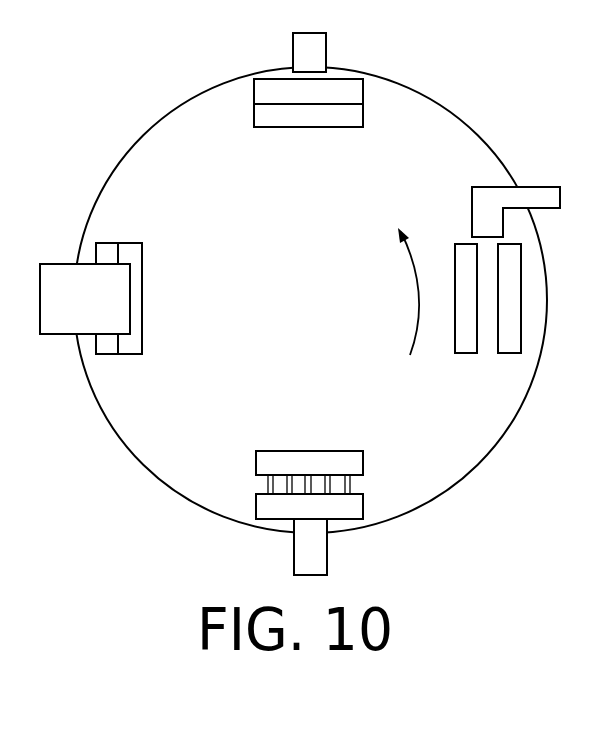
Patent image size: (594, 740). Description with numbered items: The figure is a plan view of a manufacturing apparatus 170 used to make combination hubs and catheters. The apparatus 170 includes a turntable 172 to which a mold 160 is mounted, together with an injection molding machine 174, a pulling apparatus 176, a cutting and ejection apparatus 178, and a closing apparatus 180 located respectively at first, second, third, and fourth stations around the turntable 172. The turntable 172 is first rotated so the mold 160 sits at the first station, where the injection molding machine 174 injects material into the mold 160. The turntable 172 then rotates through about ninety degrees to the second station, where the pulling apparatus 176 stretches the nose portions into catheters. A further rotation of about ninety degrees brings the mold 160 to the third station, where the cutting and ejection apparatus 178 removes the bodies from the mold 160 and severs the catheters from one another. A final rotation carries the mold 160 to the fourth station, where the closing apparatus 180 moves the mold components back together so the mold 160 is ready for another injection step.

The mold 160 is at (363, 115).
The manufacturing apparatus 170 is at (72, 124).
The turntable 172 is at (433, 93).
The injection molding machine 174 is at (53, 264).
The pulling apparatus 176 is at (327, 557).
The cutting and ejection apparatus 178 is at (538, 187).
The closing apparatus 180 is at (326, 44).